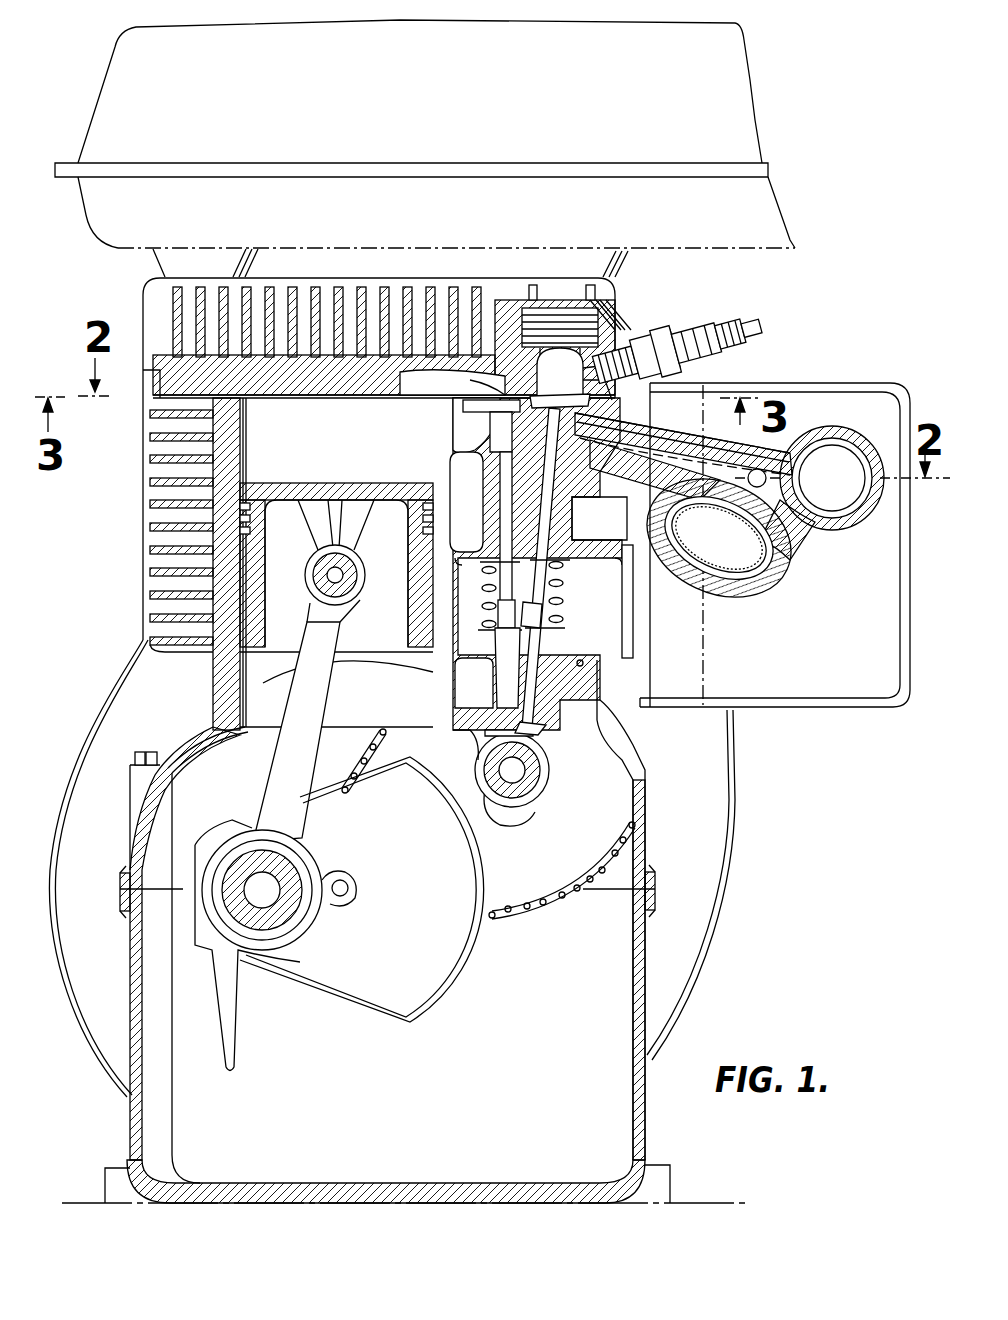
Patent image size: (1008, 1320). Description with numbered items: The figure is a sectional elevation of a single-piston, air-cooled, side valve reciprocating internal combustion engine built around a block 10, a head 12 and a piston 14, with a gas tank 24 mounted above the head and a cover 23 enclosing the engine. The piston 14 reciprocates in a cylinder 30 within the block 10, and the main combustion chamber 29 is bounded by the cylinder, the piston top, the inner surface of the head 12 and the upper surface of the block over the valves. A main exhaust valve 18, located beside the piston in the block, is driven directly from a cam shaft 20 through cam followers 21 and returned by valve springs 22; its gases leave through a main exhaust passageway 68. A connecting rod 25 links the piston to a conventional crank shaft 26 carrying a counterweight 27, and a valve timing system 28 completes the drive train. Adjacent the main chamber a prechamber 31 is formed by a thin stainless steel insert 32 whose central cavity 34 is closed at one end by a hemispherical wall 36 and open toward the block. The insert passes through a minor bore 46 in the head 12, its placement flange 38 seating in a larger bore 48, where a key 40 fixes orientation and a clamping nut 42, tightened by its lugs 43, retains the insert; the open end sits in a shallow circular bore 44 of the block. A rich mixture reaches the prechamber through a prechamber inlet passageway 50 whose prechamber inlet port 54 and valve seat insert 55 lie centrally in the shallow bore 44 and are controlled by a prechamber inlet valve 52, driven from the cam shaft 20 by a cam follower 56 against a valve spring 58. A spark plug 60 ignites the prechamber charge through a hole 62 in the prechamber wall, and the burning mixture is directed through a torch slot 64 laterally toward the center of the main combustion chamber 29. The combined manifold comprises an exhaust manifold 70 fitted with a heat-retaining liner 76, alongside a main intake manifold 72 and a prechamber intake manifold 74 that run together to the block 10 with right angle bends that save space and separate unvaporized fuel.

The block 10 is at (226, 682).
The head 12 is at (325, 310).
The piston 14 is at (353, 493).
The main exhaust valve 18 is at (462, 437).
The cam shaft 20 is at (533, 770).
The cam followers 21 is at (505, 721).
The valve springs 22 is at (480, 606).
The cover 23 is at (137, 322).
The gas tank 24 is at (752, 116).
The connecting rod 25 is at (282, 757).
The crank shaft 26 is at (274, 917).
The counterweight 27 is at (393, 993).
The valve timing system 28 is at (558, 906).
The main combustion chamber 29 is at (350, 444).
The cylinder 30 is at (232, 450).
The prechamber 31 is at (572, 300).
The insert 32 is at (550, 310).
The central cavity 34 is at (493, 400).
The hemispherical wall 36 is at (620, 297).
The placement flange 38 is at (499, 310).
The key 40 is at (600, 330).
The clamping nut 42 is at (623, 290).
The lugs 43 is at (592, 303).
The shallow circular bore 44 is at (582, 418).
The minor bore 46 is at (520, 385).
The larger bore 48 is at (506, 310).
The prechamber inlet passageway 50 is at (603, 462).
The prechamber inlet valve 52 is at (545, 587).
The prechamber inlet port 54 is at (600, 448).
The valve seat insert 55 is at (592, 434).
The cam follower 56 is at (534, 712).
The valve spring 58 is at (555, 609).
The spark plug 60 is at (688, 338).
The hole 62 is at (660, 380).
The torch slot 64 is at (482, 378).
The main exhaust passageway 68 is at (462, 453).
The exhaust manifold 70 is at (750, 547).
The main intake manifold 72 is at (822, 460).
The prechamber intake manifold 74 is at (760, 474).
The liner 76 is at (713, 506).